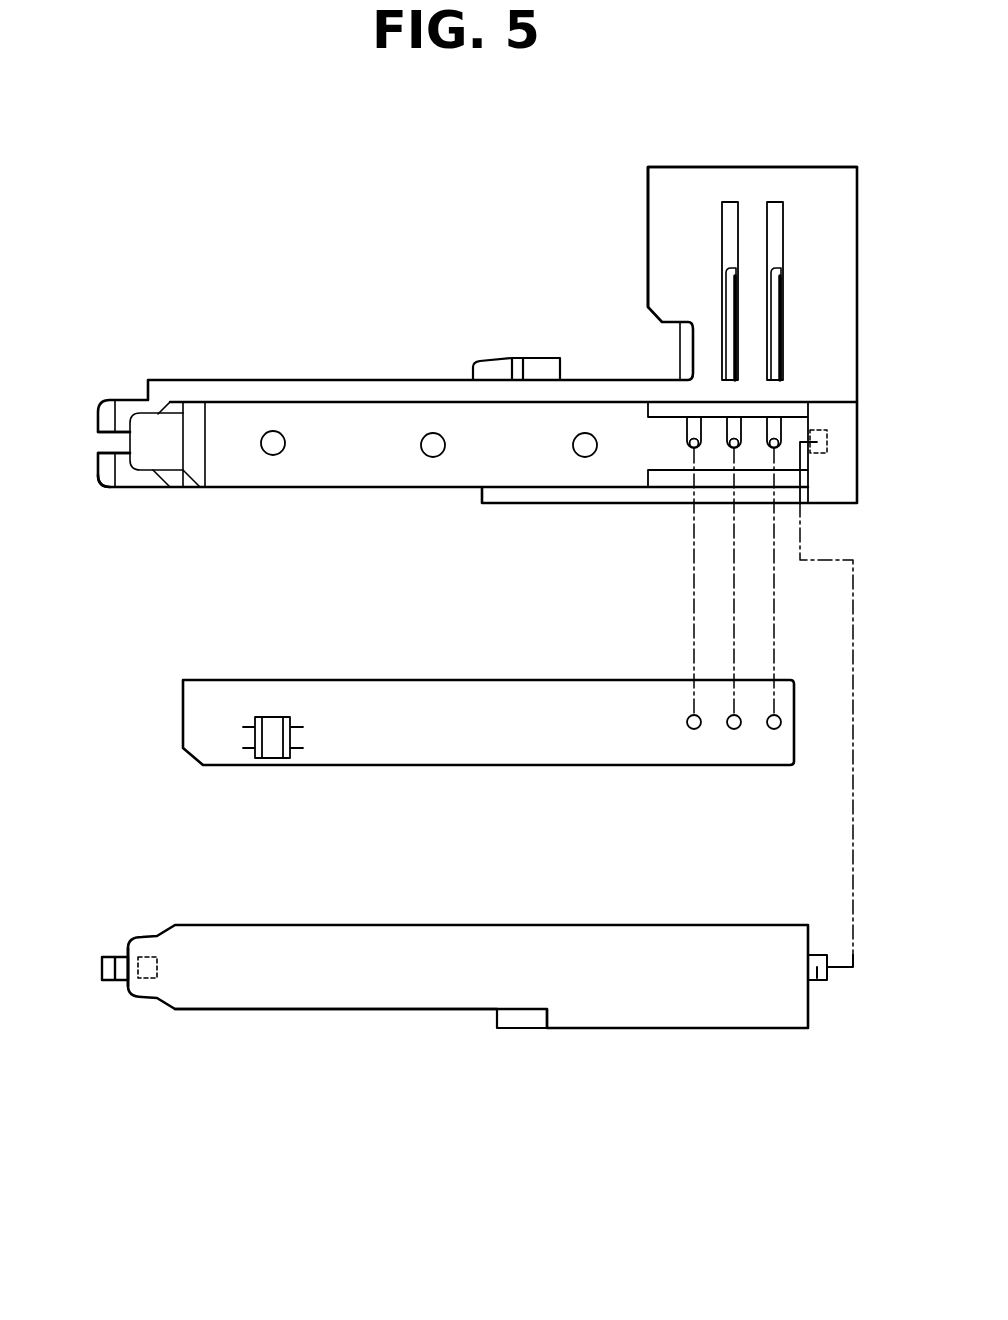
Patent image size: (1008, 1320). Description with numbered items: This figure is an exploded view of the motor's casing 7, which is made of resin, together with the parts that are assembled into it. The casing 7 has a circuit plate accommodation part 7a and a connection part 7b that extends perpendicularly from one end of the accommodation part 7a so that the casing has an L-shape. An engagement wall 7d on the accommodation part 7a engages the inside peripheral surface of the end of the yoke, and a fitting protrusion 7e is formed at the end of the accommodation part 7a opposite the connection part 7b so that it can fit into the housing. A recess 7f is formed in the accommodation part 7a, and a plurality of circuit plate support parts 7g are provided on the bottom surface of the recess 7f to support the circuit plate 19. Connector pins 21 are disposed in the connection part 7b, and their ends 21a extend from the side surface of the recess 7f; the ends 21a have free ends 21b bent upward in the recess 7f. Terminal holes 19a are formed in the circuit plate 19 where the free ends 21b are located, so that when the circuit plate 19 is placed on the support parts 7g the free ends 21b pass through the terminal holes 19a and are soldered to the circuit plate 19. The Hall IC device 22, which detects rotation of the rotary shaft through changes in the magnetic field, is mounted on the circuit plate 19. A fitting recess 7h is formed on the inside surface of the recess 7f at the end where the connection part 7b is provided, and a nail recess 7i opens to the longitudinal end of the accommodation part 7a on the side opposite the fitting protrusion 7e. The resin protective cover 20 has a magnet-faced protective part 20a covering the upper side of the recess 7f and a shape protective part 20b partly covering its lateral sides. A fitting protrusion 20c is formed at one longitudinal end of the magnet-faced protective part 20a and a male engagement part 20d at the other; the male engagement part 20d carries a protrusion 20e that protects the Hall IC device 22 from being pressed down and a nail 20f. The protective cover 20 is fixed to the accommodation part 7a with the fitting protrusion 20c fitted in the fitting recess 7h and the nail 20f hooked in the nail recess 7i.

The casing 7 is at (586, 354).
The circuit plate accommodation part 7a is at (372, 388).
The connection part 7b is at (847, 236).
The engagement wall 7d is at (553, 356).
The fitting protrusion 7e is at (105, 472).
The recess 7f is at (360, 470).
The circuit plate support parts 7g is at (197, 457).
The fitting recess 7h is at (827, 447).
The nail recess 7i is at (128, 443).
The circuit plate 19 is at (510, 748).
The terminal holes 19a is at (698, 728).
The protective cover 20 is at (598, 1082).
The magnet-faced protective part 20a is at (468, 995).
The shape protective part 20b is at (590, 1032).
The fitting protrusion 20c is at (820, 981).
The male engagement part 20d is at (222, 872).
The protrusion 20e is at (150, 957).
The nail 20f is at (110, 957).
The connector pins 21 is at (773, 313).
The ends of connector pins 21a is at (777, 422).
The free ends 21b is at (774, 447).
The Hall IC device 22 is at (272, 760).